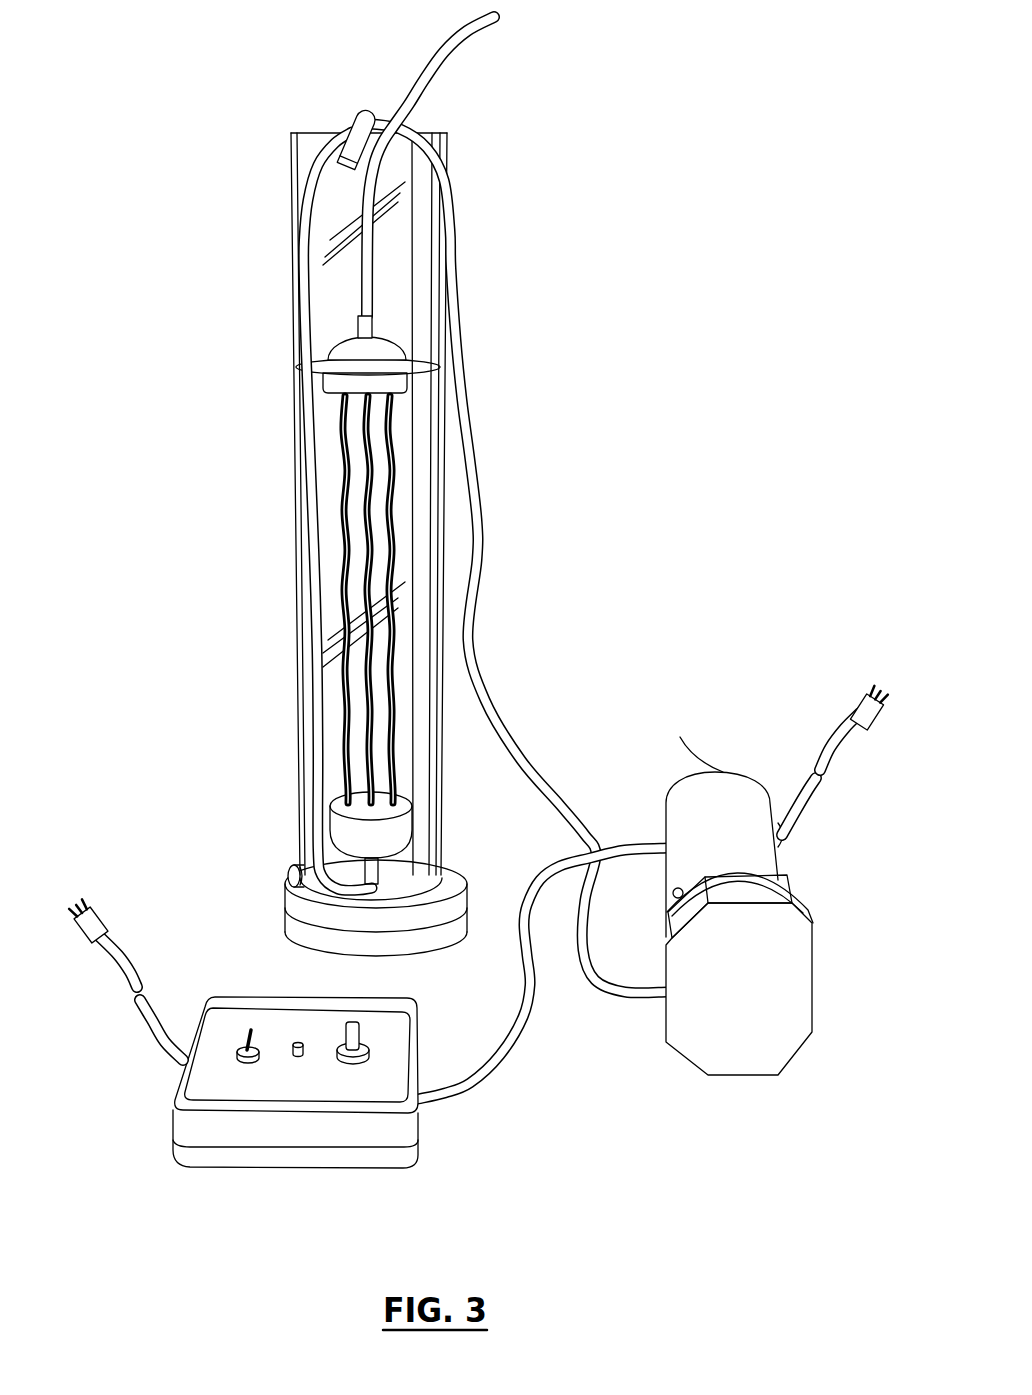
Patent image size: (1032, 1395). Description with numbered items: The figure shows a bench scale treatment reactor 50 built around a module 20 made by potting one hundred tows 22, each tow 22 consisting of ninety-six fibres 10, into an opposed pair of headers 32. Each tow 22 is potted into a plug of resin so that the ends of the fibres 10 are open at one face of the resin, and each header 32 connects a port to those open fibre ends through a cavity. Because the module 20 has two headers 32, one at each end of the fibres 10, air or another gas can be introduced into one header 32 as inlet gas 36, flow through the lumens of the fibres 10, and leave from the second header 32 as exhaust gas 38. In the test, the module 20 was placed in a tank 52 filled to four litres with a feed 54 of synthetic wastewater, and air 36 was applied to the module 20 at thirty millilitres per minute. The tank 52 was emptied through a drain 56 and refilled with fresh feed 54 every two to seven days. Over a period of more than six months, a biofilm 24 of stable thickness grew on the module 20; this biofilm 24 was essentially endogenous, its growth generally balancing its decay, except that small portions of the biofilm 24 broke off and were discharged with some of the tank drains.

The fibres 10 is at (368, 599).
The module 20 is at (268, 520).
The tow 22 is at (393, 467).
The biofilm 24 is at (390, 599).
The header 32 is at (333, 357).
The inlet gas 36 is at (486, 548).
The exhaust gas 38 is at (443, 53).
The bench scale treatment reactor 50 is at (705, 155).
The tank 52 is at (338, 160).
The feed 54 is at (328, 394).
The drain 56 is at (290, 877).